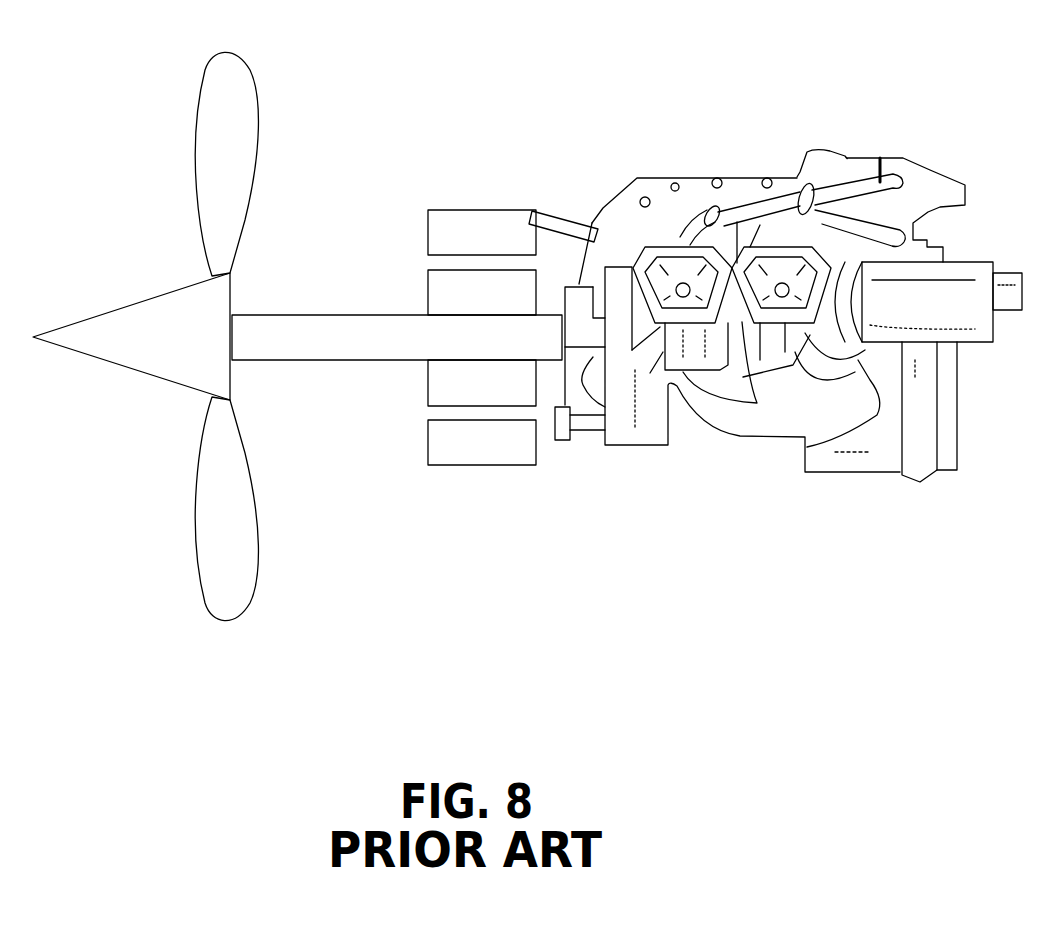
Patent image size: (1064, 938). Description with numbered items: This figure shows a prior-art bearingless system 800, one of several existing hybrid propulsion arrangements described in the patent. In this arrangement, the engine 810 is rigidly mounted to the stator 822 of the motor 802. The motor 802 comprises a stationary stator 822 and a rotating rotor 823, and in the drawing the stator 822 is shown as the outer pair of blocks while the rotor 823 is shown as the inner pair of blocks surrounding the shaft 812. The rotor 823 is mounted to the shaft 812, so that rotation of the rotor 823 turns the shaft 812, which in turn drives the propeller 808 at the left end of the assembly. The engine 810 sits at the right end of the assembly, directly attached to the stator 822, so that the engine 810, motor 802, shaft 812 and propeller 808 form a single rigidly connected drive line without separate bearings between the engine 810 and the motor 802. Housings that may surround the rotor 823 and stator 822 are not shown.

The bearingless system 800 is at (600, 63).
The motor 802 is at (476, 193).
The propeller 808 is at (210, 102).
The engine 810 is at (780, 170).
The shaft 812 is at (310, 345).
The stator 822 is at (513, 337).
The rotor 823 is at (482, 338).